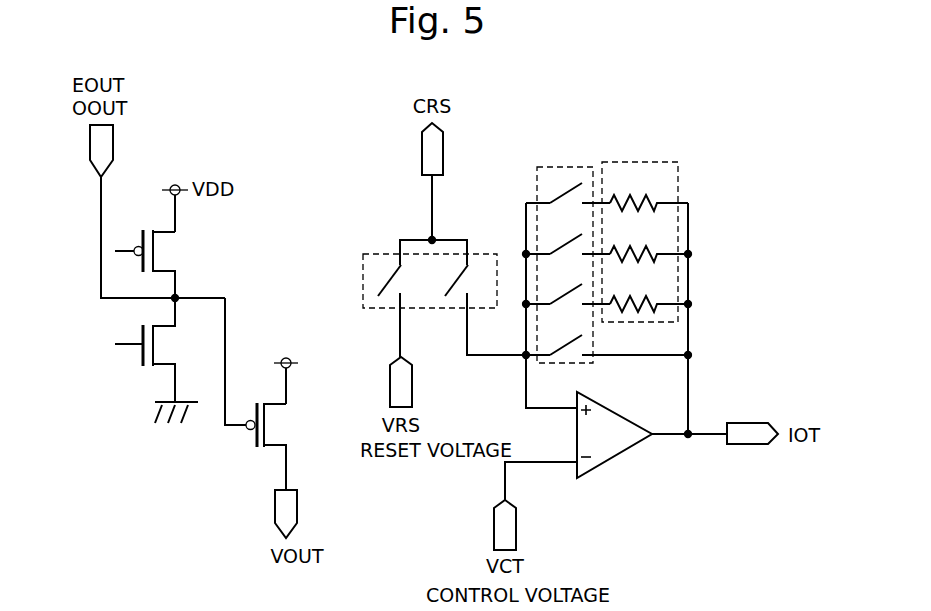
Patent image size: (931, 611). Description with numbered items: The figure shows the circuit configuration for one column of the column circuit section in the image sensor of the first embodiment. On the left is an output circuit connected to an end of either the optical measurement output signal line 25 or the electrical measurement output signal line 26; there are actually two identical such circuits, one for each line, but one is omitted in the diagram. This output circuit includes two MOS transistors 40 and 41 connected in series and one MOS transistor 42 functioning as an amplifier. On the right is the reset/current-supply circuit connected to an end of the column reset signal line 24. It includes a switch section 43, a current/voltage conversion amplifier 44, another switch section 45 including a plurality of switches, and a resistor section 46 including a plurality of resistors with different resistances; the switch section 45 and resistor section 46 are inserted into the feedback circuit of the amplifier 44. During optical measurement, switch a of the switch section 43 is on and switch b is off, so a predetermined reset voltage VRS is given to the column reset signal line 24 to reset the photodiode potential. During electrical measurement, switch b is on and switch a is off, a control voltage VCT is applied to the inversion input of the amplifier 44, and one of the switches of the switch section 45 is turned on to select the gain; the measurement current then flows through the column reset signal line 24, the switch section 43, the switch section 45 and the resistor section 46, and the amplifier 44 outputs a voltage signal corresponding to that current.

The column reset signal line 24 is at (432, 203).
The optical measurement output signal line 25 is at (101, 205).
The electrical measurement output signal line 26 is at (78, 230).
The MOS transistor 40 is at (185, 356).
The MOS transistor 41 is at (185, 256).
The MOS transistor 42 is at (298, 432).
The switch section 43 is at (374, 254).
The current/voltage (I/V) conversion amplifier 44 is at (603, 405).
The switch section 45 is at (584, 167).
The resistor section 46 is at (682, 186).